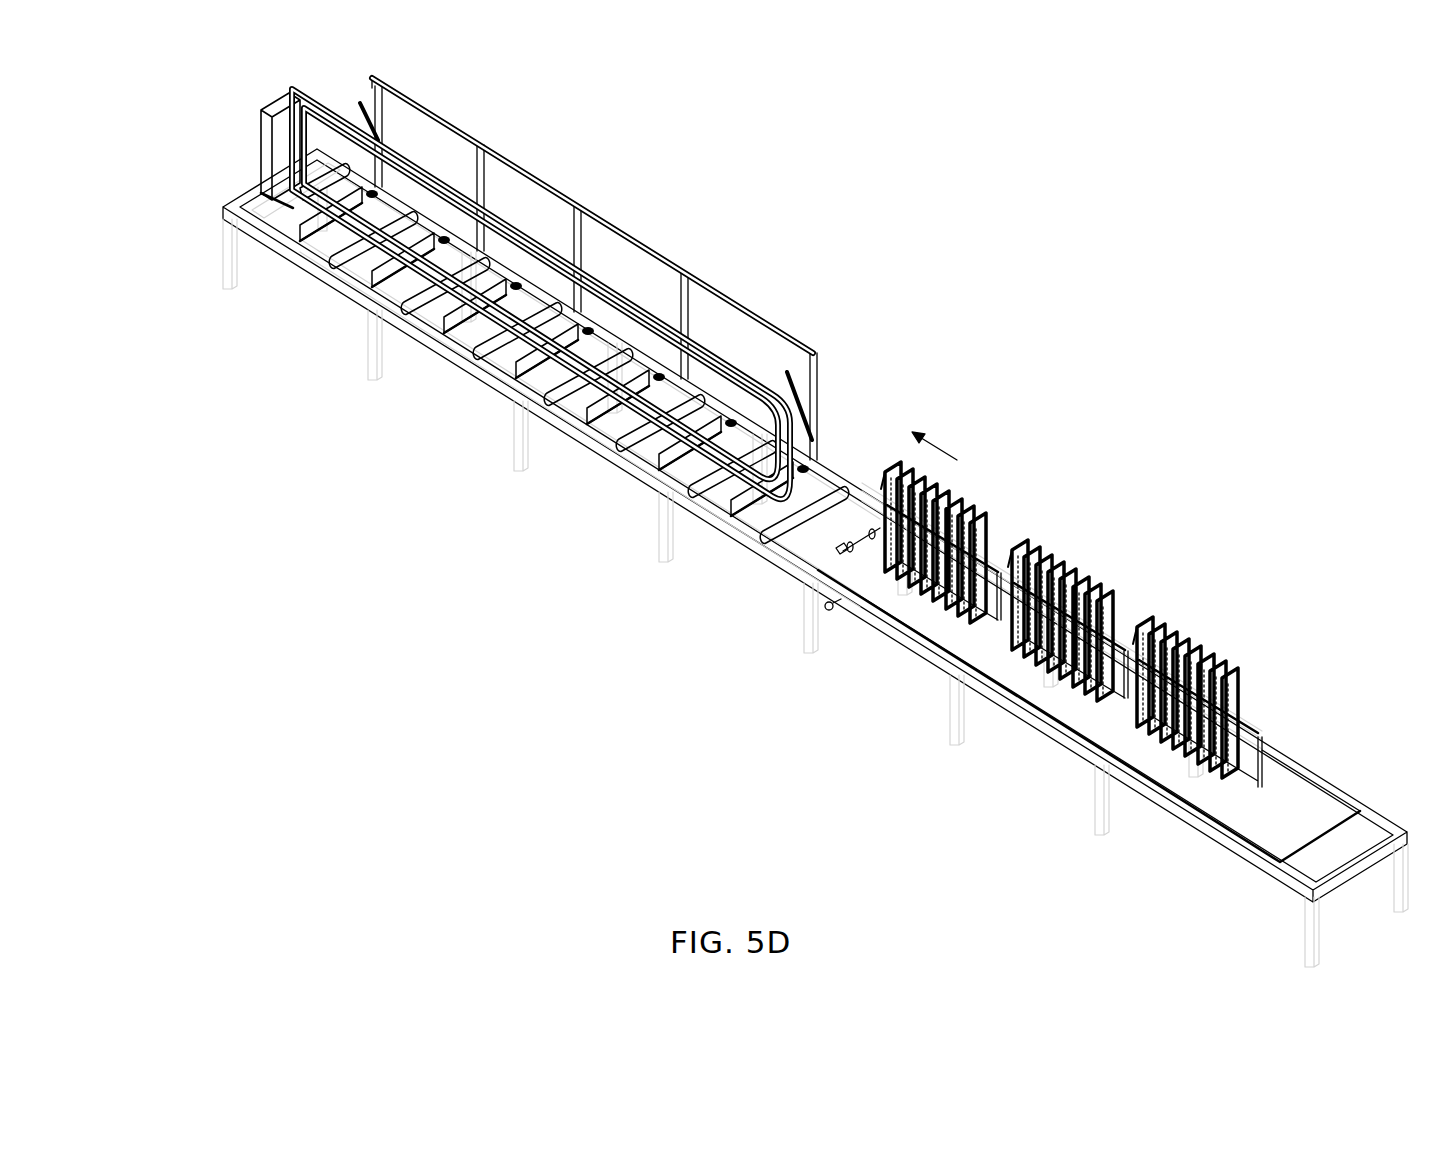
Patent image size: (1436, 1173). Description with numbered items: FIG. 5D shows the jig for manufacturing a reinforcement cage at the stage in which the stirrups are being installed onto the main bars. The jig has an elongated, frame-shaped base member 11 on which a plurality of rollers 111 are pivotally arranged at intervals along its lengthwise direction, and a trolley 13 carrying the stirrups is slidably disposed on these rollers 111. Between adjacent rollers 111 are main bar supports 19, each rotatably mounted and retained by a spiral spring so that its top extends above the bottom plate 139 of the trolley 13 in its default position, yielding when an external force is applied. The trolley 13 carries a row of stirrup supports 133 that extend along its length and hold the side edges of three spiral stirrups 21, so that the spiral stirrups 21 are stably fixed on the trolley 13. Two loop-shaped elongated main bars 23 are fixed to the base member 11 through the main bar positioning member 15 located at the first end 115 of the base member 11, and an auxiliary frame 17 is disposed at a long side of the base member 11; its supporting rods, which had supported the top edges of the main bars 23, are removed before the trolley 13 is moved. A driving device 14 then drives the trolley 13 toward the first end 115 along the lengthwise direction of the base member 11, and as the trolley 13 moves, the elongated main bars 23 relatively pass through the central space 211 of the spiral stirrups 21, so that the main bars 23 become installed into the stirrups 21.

The base member 11 is at (1048, 734).
The trolley 13 is at (1318, 800).
The stirrup support 133 is at (1250, 736).
The bottom plate 139 is at (832, 562).
The driving device 14 is at (829, 608).
The main bar positioning member 15 is at (268, 104).
The first end 115 is at (245, 200).
The auxiliary frame 17 is at (805, 348).
The main bar support 19 is at (657, 452).
The rollers 111 is at (617, 437).
The spiral stirrup 21 is at (965, 500).
The central space 211 is at (975, 530).
The elongated main bar 23 is at (627, 300).